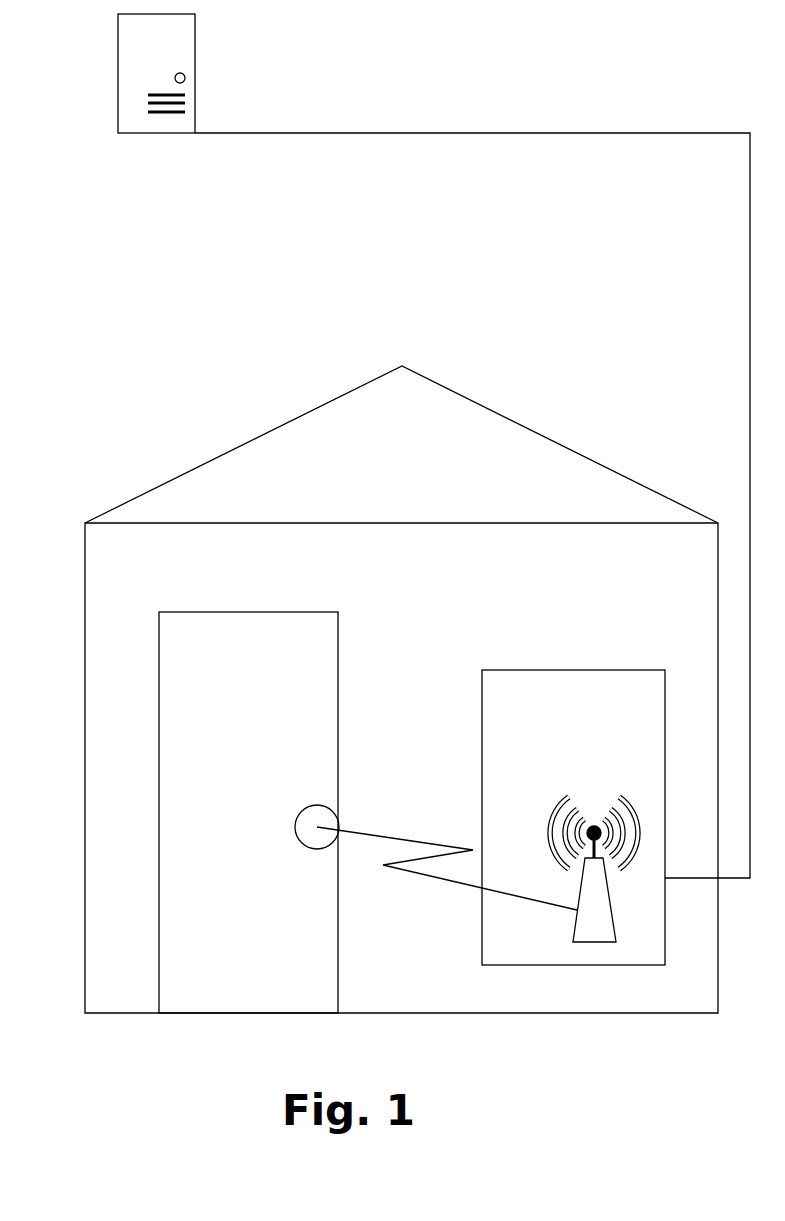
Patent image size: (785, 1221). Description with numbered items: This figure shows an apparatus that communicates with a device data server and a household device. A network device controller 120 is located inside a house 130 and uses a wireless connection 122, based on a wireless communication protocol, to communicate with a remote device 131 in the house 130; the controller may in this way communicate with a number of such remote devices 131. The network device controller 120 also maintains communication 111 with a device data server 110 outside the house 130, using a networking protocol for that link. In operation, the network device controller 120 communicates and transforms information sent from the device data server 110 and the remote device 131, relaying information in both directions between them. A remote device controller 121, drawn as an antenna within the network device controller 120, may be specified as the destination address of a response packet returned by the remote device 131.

The device data server 110 is at (153, 43).
The communication 111 is at (630, 133).
The network device controller 120 is at (573, 817).
The remote device controller 121 is at (600, 908).
The wireless connection 122 is at (457, 883).
The house 130 is at (284, 551).
The remote device 131 is at (316, 819).